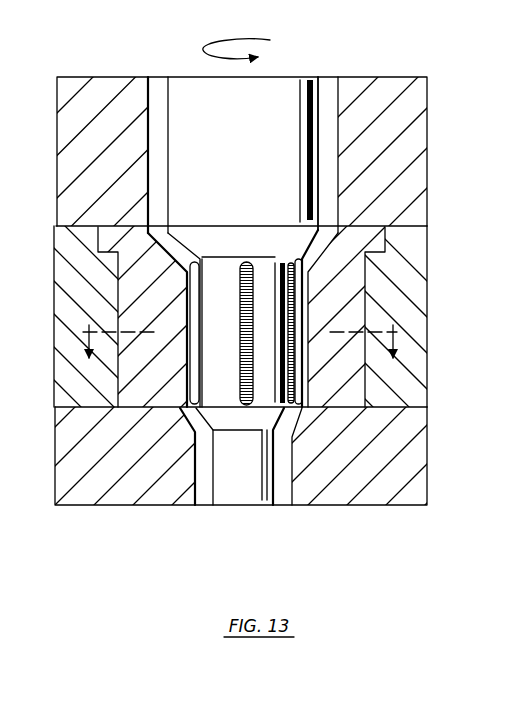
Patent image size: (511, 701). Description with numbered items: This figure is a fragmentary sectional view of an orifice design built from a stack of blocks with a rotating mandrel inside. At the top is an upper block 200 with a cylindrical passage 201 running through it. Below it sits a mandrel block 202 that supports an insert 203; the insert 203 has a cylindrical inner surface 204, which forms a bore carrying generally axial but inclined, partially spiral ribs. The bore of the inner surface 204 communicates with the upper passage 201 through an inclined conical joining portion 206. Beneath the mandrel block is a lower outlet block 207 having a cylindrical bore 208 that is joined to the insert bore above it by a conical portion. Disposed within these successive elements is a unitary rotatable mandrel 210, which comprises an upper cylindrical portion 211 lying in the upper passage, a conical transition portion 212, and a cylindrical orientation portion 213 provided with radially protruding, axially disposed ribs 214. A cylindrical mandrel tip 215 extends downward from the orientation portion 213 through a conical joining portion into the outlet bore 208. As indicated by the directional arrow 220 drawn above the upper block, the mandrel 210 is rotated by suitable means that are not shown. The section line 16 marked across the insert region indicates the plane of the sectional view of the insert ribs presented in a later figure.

The upper block 200 is at (415, 138).
The cylindrical passage 201 is at (336, 181).
The mandrel block 202 is at (410, 274).
The insert 203 is at (353, 387).
The cylindrical inner surface 204 is at (300, 306).
The inclined conical joining portion 206 is at (312, 250).
The lower outlet block 207 is at (395, 490).
The cylindrical bore 208 is at (293, 490).
The rotatable mandrel 210 is at (294, 76).
The upper cylindrical portion 211 is at (231, 166).
The conical transition portion 212 is at (213, 253).
The cylindrical orientation portion 213 is at (216, 315).
The ribs 214 is at (240, 289).
The cylindrical mandrel tip 215 is at (237, 490).
The directional arrow 220 is at (236, 33).
The section line 16 is at (242, 354).